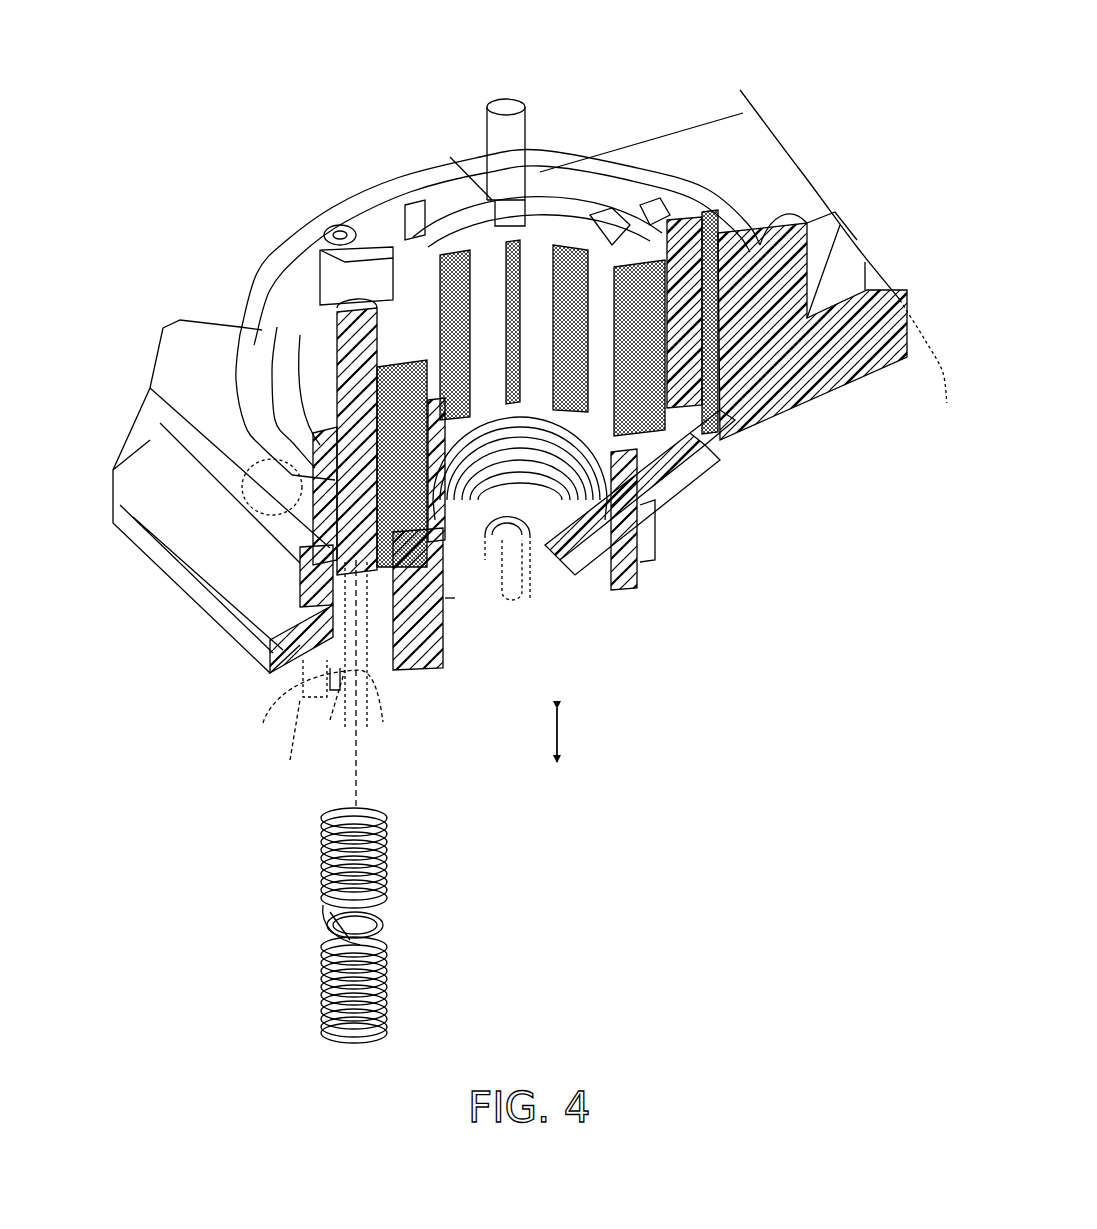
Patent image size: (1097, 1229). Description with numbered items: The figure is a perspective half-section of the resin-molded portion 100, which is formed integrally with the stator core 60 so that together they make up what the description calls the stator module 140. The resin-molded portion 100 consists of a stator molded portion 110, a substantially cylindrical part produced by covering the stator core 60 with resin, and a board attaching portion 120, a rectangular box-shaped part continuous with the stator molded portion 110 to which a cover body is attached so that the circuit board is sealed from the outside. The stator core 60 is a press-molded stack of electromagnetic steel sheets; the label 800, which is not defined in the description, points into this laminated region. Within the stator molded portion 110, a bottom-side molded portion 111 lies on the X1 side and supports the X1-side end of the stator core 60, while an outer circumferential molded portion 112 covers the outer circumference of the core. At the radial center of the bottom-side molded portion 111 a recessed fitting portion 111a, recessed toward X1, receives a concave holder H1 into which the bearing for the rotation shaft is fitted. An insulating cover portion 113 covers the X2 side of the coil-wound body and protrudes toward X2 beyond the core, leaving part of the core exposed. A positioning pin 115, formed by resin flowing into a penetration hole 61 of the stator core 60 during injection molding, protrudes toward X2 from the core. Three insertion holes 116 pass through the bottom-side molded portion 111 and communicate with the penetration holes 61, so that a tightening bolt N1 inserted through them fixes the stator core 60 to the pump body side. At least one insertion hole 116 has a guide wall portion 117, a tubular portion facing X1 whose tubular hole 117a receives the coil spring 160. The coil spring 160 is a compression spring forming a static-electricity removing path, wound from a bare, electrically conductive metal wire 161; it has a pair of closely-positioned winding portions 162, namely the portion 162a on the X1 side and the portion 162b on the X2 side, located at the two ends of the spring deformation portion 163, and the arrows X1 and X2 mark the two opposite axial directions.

The resin-molded portion 100 is at (682, 102).
The stator molded portion 110 is at (440, 175).
The bottom-side molded portion 111 is at (645, 500).
The recessed fitting portion 111a is at (540, 547).
The outer circumferential molded portion 112 is at (260, 497).
The insulating cover portion 113 is at (582, 165).
The positioning pin 115 is at (325, 222).
The insertion hole 116 is at (325, 690).
The guide wall portion 117 is at (295, 690).
The tubular hole 117a is at (332, 682).
The board attaching portion 120 is at (746, 150).
The stator module 140 is at (262, 302).
The coil spring 160 is at (346, 925).
The wire 161 is at (322, 937).
The closely-positioned winding portion 162 is at (288, 925).
The closely-positioned winding portion 162a is at (322, 845).
The closely-positioned winding portion 162b is at (322, 998).
The spring deformation portion 163 is at (385, 928).
The stator core 60 is at (596, 500).
The penetration hole 61 is at (710, 400).
The mounting portion 800 is at (685, 435).
The holder H1 is at (466, 617).
The tightening bolt N1 is at (500, 100).
The X1 side X1 is at (561, 757).
The X2 side X2 is at (558, 713).